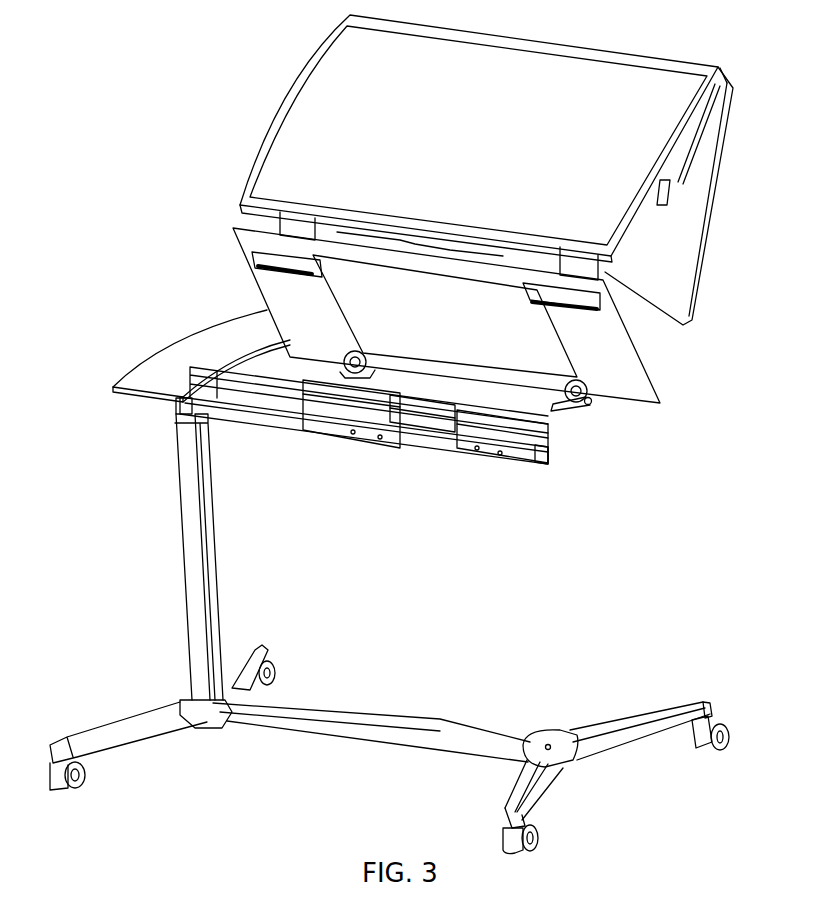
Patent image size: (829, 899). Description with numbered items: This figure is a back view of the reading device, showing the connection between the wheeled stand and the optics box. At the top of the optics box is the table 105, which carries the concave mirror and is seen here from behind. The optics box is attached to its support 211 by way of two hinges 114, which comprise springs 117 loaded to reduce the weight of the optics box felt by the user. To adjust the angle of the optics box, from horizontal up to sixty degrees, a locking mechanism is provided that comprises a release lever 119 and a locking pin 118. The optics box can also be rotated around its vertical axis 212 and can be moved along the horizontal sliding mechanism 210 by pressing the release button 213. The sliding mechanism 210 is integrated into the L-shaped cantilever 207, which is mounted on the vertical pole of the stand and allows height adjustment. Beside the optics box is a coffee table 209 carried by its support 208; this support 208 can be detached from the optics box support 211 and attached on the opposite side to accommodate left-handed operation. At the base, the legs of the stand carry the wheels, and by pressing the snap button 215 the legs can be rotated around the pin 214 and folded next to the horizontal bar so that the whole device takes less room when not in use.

The table 105 is at (343, 75).
The release lever 119 is at (600, 297).
The locking pin 118 is at (573, 382).
The hinges 114 is at (590, 403).
The springs 117 is at (590, 406).
The coffee table 209 is at (170, 362).
The support 208 is at (177, 408).
The cantilever 207 is at (255, 420).
The sliding mechanism 210 is at (387, 448).
The release button 213 is at (427, 440).
The vertical axis 212 is at (467, 450).
The optics box support 211 is at (543, 463).
The pin 214 is at (570, 737).
The snap button 215 is at (587, 733).